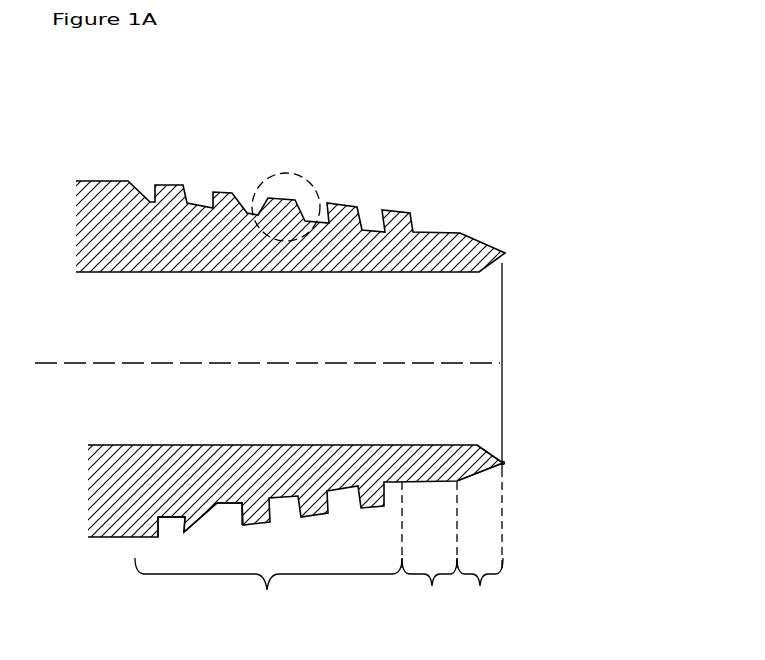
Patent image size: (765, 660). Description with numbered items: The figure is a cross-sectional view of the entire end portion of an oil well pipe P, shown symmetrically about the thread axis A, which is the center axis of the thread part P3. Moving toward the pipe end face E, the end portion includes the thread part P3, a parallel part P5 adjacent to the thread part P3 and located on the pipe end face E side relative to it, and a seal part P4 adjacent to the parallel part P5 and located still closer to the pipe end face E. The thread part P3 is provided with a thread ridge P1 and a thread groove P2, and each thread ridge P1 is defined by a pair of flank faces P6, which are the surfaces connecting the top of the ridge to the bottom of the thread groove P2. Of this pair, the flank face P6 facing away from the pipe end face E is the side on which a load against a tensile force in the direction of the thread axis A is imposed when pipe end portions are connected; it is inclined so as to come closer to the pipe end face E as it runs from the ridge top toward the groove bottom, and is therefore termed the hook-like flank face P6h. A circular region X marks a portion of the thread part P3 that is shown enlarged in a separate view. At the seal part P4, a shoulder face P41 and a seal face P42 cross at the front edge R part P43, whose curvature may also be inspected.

The oil well pipe P is at (97, 157).
The circular region X is at (290, 172).
The thread axis A is at (208, 362).
The pipe end face E is at (502, 333).
The thread ridge P1 is at (200, 518).
The thread groove P2 is at (170, 523).
The thread part P3 is at (268, 548).
The seal part P4 is at (480, 586).
The parallel part P5 is at (429, 548).
The flank face P6 is at (215, 515).
The hook-like flank face P6h is at (177, 530).
The shoulder face P41 is at (503, 447).
The seal face P42 is at (483, 472).
The front edge R part P43 is at (508, 463).